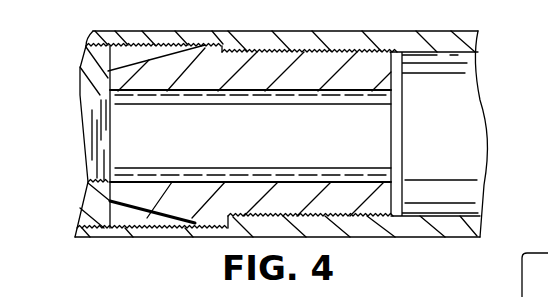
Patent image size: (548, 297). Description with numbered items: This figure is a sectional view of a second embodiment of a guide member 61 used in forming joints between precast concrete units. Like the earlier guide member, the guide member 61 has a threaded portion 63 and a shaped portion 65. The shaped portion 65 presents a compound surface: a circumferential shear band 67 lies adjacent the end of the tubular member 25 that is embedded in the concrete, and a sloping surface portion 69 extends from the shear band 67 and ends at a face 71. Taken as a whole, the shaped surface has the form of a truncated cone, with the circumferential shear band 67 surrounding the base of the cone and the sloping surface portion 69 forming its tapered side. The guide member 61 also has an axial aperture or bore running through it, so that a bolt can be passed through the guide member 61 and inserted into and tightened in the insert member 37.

The tubular member 25 is at (387, 38).
The insert member 37 is at (214, 159).
The guide member 61 is at (265, 52).
The threaded portion 63 is at (317, 51).
The shaped portion 65 is at (160, 68).
The circumferential shear band 67 is at (206, 47).
The sloping surface portion 69 is at (152, 68).
The face 71 is at (82, 68).